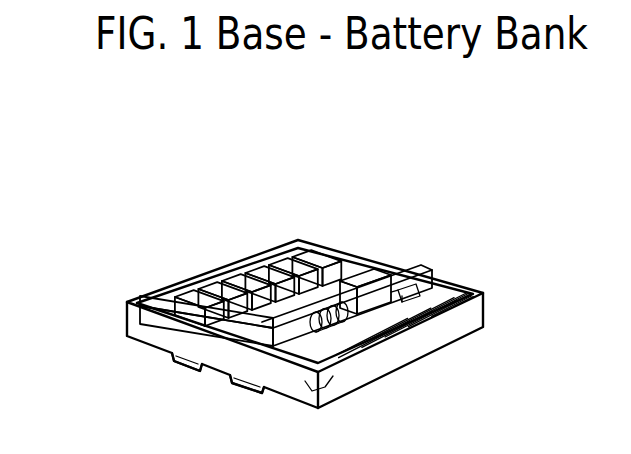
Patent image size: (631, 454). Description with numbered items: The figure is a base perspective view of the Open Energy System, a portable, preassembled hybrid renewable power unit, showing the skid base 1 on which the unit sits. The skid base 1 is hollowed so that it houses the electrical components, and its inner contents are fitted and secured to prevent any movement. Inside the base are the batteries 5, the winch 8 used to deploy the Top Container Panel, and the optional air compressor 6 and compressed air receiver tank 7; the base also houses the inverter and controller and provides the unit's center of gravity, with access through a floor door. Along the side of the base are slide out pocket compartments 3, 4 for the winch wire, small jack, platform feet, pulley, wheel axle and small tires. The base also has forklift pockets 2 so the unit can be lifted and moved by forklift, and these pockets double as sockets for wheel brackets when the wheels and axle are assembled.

The skid base 1 is at (182, 280).
The forklift pockets 2 is at (185, 347).
The slide out pocket compartment 3 is at (287, 378).
The slide out pocket compartment 4 is at (327, 370).
The batteries 5 is at (443, 297).
The air compressor 6 is at (410, 283).
The compressed air receiver tank 7 is at (340, 260).
The winch 8 is at (298, 240).